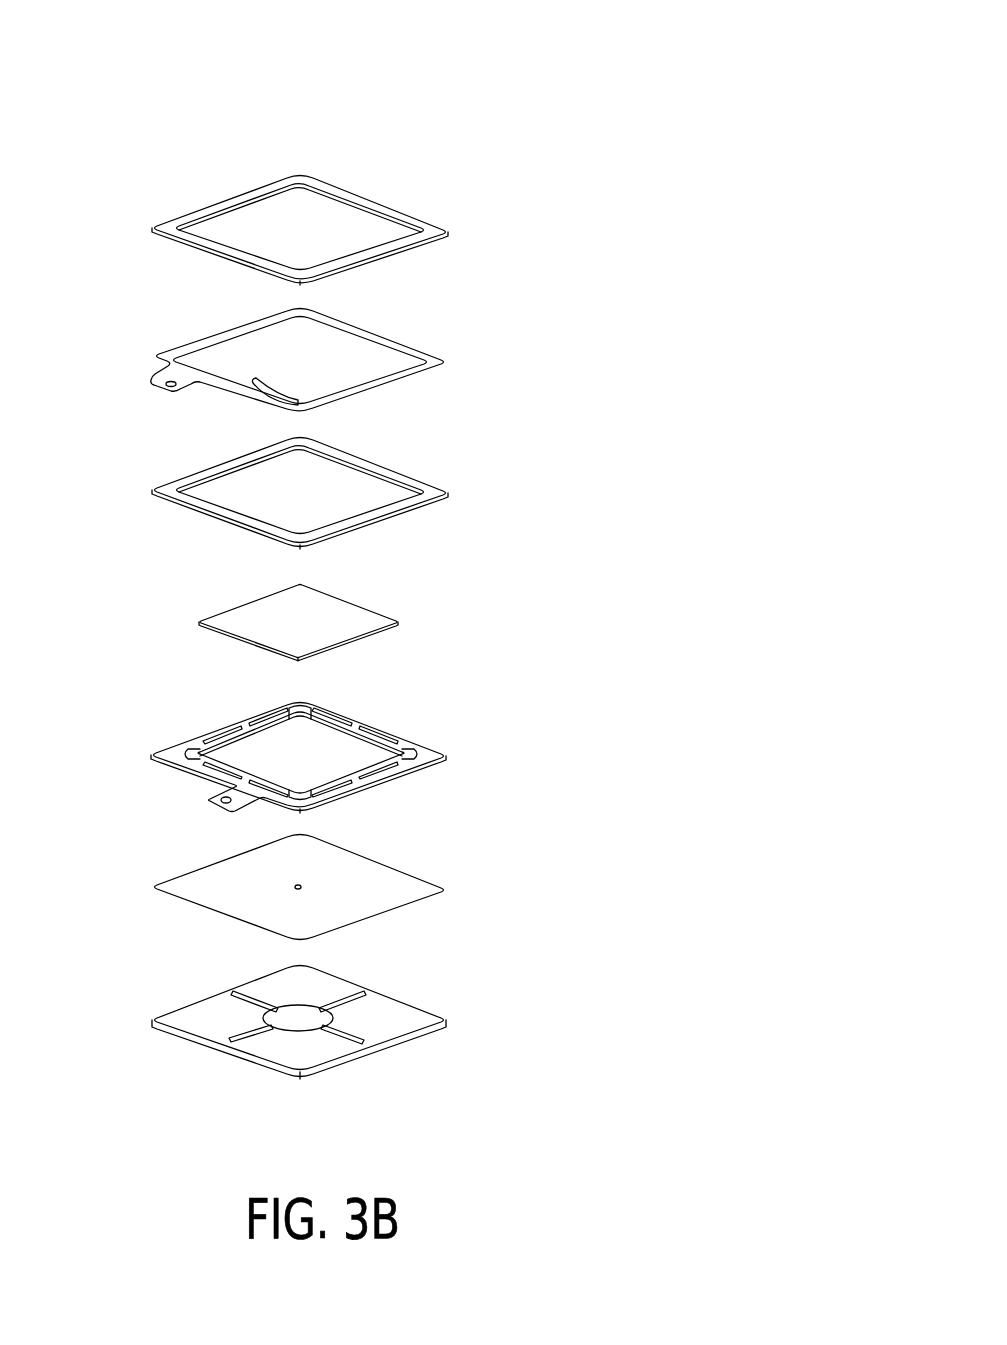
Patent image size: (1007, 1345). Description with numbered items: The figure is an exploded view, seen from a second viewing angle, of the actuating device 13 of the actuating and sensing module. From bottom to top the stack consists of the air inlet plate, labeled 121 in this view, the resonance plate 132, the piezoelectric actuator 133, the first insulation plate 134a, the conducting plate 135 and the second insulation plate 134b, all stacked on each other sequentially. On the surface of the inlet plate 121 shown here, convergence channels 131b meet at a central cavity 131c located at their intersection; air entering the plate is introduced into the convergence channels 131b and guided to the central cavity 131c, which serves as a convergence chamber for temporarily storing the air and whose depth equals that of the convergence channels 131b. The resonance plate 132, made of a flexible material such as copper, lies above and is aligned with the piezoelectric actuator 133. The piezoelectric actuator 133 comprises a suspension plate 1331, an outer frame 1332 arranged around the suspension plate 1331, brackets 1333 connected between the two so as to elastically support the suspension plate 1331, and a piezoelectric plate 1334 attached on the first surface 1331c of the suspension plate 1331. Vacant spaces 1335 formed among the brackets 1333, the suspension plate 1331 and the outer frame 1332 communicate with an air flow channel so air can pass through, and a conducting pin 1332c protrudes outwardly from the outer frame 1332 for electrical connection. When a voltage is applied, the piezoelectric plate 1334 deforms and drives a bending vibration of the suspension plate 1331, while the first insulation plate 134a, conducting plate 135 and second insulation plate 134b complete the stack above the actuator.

The actuating device 13 is at (705, 50).
The second insulation plate 134b is at (435, 195).
The conducting plate 135 is at (435, 326).
The first insulation plate 134a is at (433, 455).
The piezoelectric actuator 133 is at (344, 715).
The piezoelectric plate 1334 is at (388, 596).
The vacant space 1335 is at (317, 718).
The suspension plate 1331 is at (290, 740).
The outer frame 1332 is at (428, 751).
The bracket 1333 is at (360, 778).
The first surface 1331c is at (250, 755).
The conducting pin 1332c is at (222, 806).
The resonance plate 132 is at (435, 860).
The base plate 121 is at (331, 1011).
The central cavity 131c is at (283, 1015).
The convergence channel 131b is at (340, 1037).